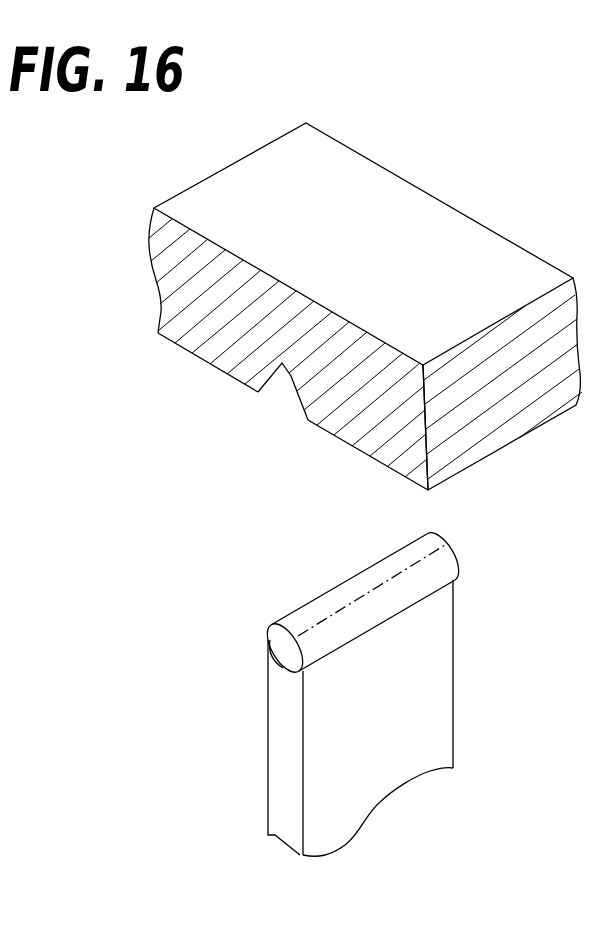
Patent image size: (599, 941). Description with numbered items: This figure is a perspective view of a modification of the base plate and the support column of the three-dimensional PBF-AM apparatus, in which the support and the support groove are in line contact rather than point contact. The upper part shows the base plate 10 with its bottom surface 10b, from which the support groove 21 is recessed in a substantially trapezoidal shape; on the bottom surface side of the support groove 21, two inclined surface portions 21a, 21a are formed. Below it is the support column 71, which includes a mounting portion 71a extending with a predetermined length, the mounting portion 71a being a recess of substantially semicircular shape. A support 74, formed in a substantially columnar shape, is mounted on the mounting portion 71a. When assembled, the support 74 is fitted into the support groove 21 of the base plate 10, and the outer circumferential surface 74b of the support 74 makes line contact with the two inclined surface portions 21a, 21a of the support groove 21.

The support groove 21 is at (389, 131).
The inclined surface portion 21a is at (280, 394).
The base plate 10 is at (393, 363).
The bottom surface 10b is at (377, 458).
The support column 71 is at (443, 755).
The mounting portion 71a is at (270, 640).
The support 74 is at (413, 593).
The outer circumferential surface 74b is at (446, 544).